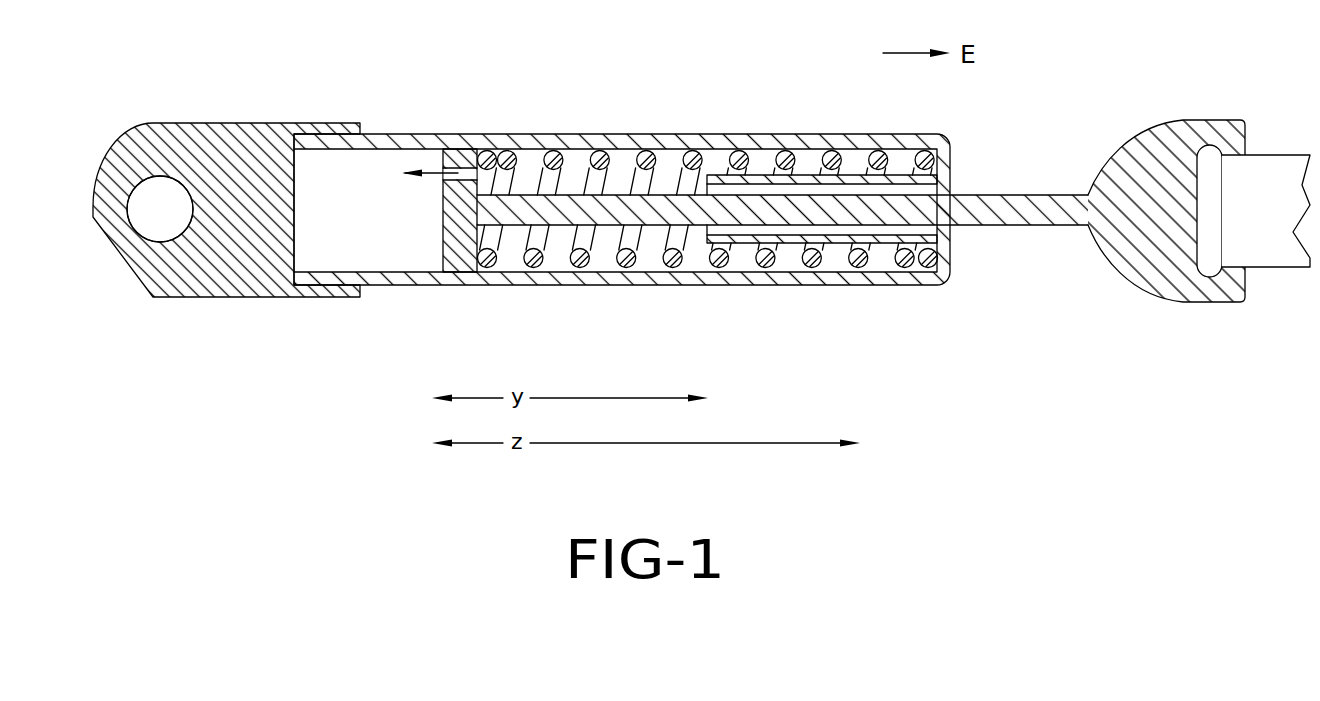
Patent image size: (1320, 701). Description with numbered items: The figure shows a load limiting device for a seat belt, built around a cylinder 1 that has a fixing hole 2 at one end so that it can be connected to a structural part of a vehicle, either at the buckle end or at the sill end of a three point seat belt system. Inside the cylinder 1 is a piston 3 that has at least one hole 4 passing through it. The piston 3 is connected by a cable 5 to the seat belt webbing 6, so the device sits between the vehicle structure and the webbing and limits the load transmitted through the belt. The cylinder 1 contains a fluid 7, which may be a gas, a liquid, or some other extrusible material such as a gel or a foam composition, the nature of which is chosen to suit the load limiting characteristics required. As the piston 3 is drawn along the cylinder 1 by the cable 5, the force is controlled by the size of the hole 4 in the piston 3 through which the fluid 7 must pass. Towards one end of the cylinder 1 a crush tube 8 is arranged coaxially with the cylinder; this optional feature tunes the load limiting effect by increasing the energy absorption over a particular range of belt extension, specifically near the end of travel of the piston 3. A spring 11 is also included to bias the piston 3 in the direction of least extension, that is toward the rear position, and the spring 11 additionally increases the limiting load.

The cylinder 1 is at (190, 298).
The fixing hole 2 is at (155, 188).
The piston 3 is at (455, 260).
The hole 4 is at (445, 172).
The cable 5 is at (1137, 145).
The seat belt webbing 6 is at (1287, 178).
The fluid 7 is at (603, 257).
The crush tube 8 is at (758, 182).
The spring 11 is at (555, 160).